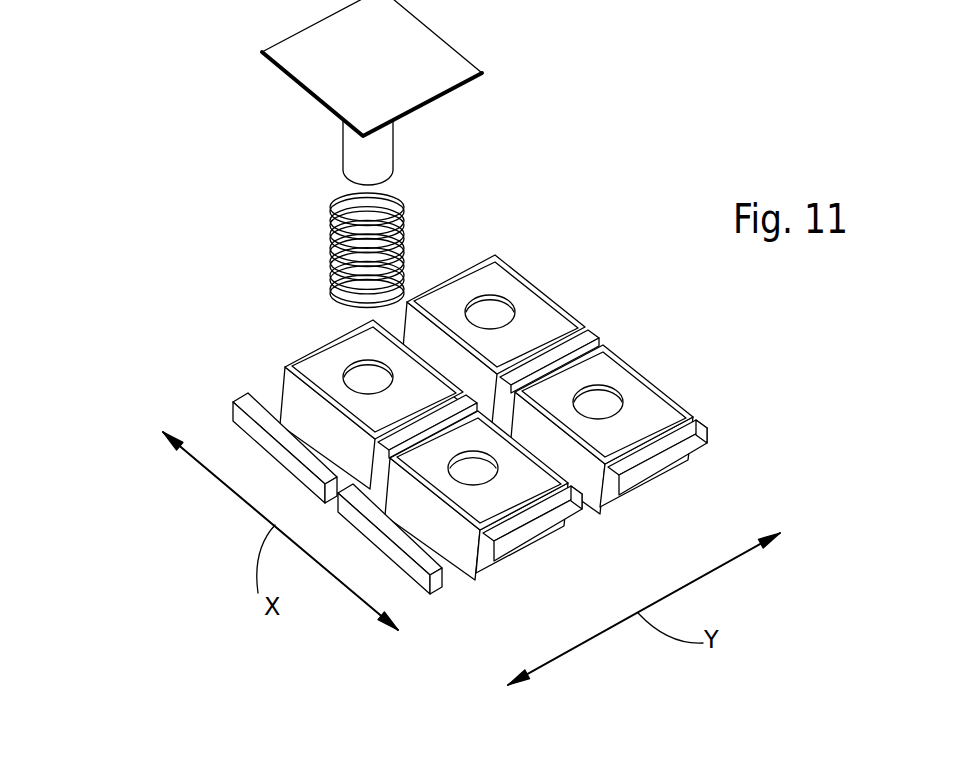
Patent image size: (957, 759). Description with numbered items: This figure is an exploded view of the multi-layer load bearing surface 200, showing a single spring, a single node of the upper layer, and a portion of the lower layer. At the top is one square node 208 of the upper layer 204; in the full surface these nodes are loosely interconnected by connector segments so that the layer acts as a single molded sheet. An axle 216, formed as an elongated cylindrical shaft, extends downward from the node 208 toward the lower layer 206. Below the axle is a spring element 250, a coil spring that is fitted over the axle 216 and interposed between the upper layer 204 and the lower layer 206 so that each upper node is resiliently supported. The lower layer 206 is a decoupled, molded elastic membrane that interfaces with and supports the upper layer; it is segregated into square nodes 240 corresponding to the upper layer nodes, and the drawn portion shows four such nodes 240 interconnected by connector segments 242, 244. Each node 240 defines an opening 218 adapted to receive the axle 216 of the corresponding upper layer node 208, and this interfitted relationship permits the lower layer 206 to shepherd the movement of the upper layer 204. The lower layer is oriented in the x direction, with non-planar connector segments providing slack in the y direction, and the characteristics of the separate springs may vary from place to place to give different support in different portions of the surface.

The load bearing surface 200 is at (132, 12).
The upper layer 204 is at (305, 31).
The lower layer 206 is at (695, 422).
The node 208 is at (413, 77).
The axle 216 is at (393, 150).
The opening 218 is at (507, 293).
The node 240 is at (474, 405).
The connector segment 242 is at (578, 347).
The connector segment 244 is at (583, 490).
The spring element 250 is at (332, 252).